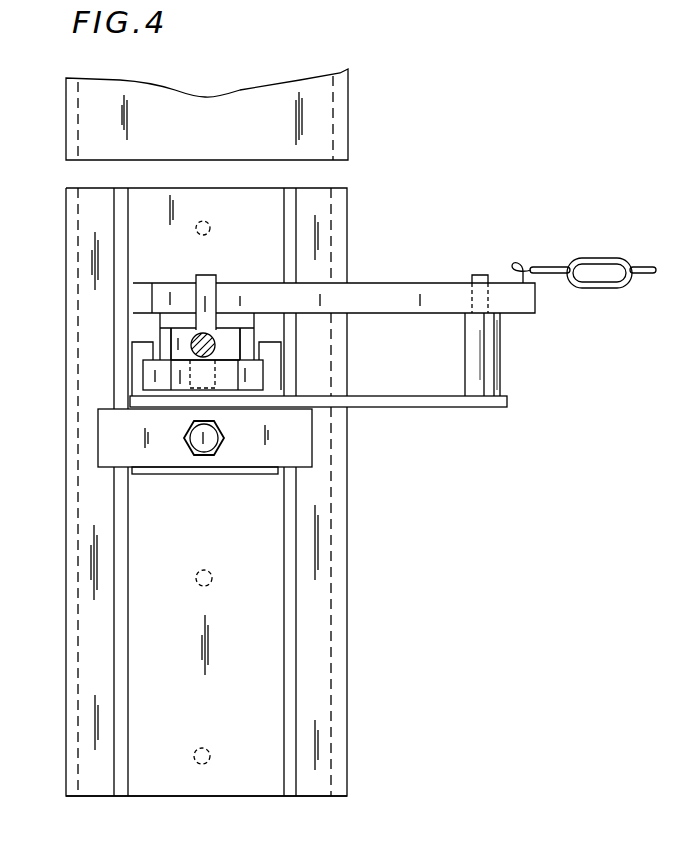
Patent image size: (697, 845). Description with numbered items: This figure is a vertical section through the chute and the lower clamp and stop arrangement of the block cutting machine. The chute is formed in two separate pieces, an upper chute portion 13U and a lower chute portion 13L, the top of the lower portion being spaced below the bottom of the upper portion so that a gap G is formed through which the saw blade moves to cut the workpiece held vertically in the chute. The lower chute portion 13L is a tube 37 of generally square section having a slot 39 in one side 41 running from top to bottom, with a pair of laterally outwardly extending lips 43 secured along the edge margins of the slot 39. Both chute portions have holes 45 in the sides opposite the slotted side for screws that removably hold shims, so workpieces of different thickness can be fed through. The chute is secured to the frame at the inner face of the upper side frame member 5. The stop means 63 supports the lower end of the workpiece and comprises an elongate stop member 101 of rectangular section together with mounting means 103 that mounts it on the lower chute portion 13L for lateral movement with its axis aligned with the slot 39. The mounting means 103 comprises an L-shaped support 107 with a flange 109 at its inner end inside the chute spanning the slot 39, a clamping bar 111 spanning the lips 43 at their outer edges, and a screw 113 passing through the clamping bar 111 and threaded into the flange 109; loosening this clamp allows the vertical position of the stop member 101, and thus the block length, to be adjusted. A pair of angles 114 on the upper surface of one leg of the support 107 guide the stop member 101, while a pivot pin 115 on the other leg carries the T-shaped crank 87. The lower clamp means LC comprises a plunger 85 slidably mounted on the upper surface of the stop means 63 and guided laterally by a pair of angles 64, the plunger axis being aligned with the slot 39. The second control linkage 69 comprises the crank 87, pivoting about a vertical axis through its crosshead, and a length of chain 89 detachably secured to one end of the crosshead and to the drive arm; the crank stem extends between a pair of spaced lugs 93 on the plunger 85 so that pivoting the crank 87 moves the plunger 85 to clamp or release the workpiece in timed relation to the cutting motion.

The upper chute portion 13U is at (353, 107).
The lower chute portion 13L is at (347, 593).
The gap G is at (333, 178).
The tube 37 is at (350, 217).
The lips 43 is at (285, 678).
The side 41 is at (315, 773).
The stop means 63 is at (84, 452).
The upper side frame member 5 is at (228, 730).
The slot 39 is at (200, 777).
The holes 45 is at (213, 226).
The second control linkage 69 is at (446, 239).
The T-shaped crank 87 is at (441, 291).
The lugs 93 is at (198, 275).
The pivot pin 115 is at (500, 373).
The chain 89 is at (600, 258).
The angles 64 is at (140, 328).
The lower clamp means LC is at (130, 347).
The plunger 85 is at (228, 337).
The angles 114 is at (145, 362).
The mounting means 103 is at (130, 398).
The stop member 101 is at (150, 372).
The L-shaped support 107 is at (410, 400).
The clamping bar 111 is at (295, 445).
The screw 113 is at (203, 443).
The flange 109 is at (227, 468).